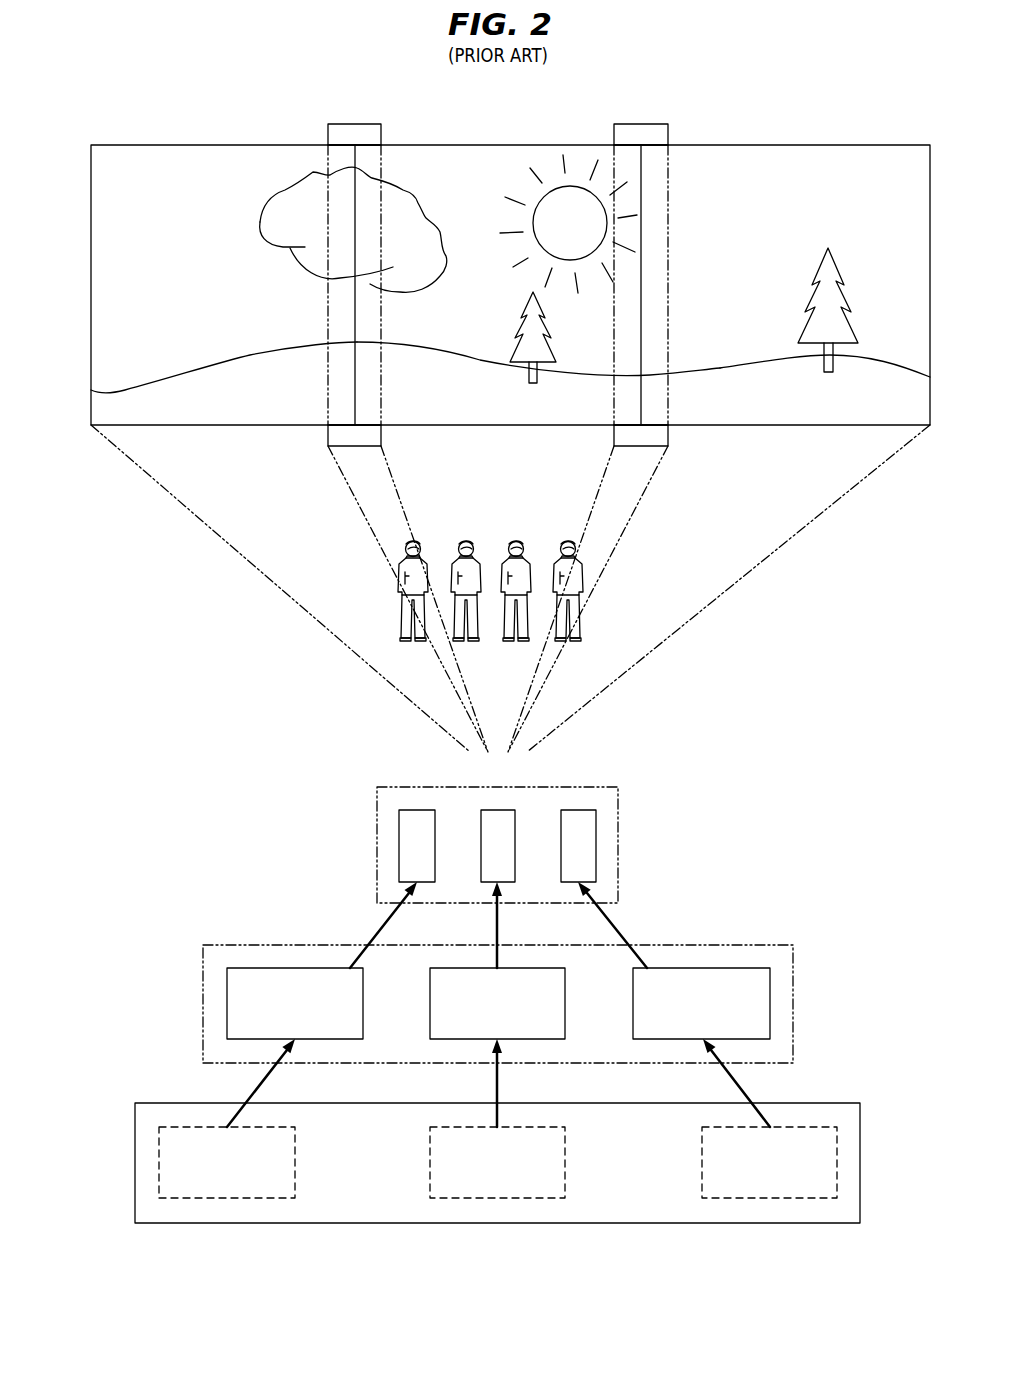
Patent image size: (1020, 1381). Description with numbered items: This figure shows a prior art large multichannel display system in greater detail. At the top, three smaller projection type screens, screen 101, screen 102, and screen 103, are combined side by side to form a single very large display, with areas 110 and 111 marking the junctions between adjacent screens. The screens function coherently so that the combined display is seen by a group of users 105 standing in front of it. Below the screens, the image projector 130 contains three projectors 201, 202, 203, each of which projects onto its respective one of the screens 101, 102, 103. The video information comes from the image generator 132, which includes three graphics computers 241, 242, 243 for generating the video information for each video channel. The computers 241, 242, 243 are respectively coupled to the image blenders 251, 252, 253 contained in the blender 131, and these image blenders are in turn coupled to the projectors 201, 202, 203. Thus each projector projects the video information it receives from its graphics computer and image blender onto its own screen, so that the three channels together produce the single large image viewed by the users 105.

The screen 101 is at (147, 145).
The screen 102 is at (495, 145).
The screen 103 is at (875, 145).
The area 110 is at (341, 124).
The area 111 is at (655, 124).
The group of users 105 is at (364, 589).
The image projector 130 is at (377, 815).
The projector 201 is at (399, 852).
The projector 202 is at (515, 832).
The projector 203 is at (596, 852).
The blender 131 is at (203, 973).
The image blender 251 is at (363, 995).
The image blender 252 is at (565, 995).
The image blender 253 is at (633, 1010).
The image generator 132 is at (135, 1133).
The graphics computer 241 is at (295, 1153).
The graphics computer 242 is at (565, 1153).
The graphics computer 243 is at (702, 1170).